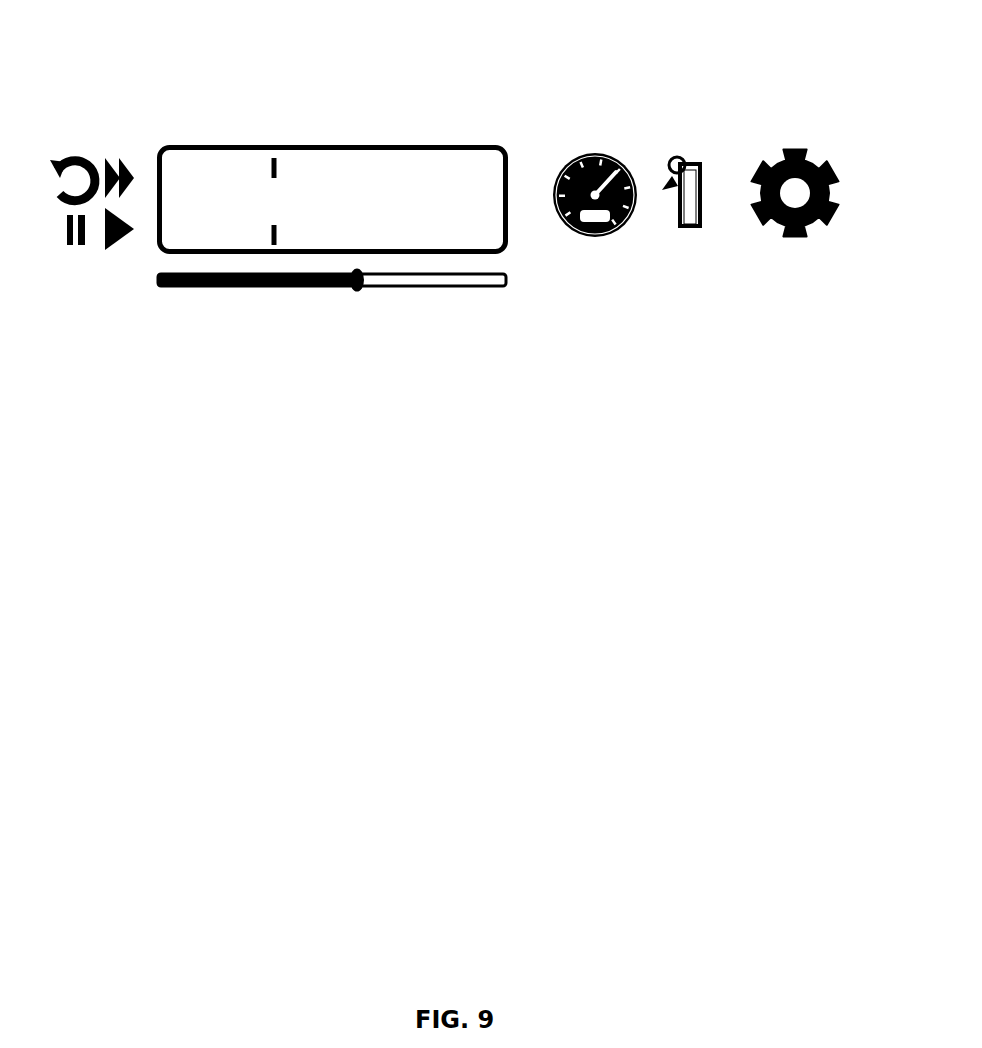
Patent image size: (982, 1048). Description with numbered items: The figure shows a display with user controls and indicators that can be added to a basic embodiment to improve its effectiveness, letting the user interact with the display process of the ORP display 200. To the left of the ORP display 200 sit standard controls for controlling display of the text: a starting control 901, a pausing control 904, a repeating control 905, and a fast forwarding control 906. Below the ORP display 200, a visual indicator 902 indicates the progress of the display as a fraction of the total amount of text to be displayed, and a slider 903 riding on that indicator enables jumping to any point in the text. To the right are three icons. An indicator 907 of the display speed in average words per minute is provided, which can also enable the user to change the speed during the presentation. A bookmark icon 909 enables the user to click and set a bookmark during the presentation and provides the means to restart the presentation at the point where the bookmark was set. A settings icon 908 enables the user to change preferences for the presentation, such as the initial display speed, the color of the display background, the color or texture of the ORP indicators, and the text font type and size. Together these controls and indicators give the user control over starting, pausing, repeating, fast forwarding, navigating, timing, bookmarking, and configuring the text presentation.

The ORP display 200 is at (322, 147).
The starting control 901 is at (112, 248).
The visual indicator 902 is at (237, 288).
The slider 903 is at (362, 290).
The pausing control 904 is at (79, 245).
The repeating control 905 is at (79, 158).
The fast forwarding control 906 is at (122, 158).
The indicator of the display speed 907 is at (605, 150).
The settings icon 908 is at (808, 147).
The bookmark icon 909 is at (705, 158).